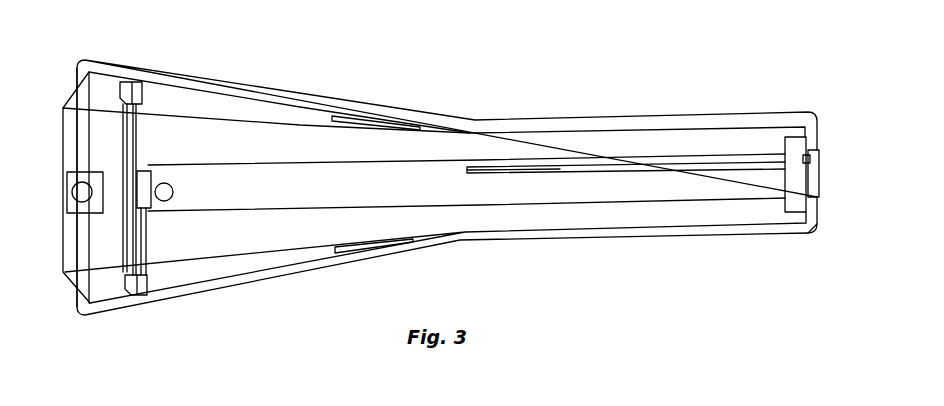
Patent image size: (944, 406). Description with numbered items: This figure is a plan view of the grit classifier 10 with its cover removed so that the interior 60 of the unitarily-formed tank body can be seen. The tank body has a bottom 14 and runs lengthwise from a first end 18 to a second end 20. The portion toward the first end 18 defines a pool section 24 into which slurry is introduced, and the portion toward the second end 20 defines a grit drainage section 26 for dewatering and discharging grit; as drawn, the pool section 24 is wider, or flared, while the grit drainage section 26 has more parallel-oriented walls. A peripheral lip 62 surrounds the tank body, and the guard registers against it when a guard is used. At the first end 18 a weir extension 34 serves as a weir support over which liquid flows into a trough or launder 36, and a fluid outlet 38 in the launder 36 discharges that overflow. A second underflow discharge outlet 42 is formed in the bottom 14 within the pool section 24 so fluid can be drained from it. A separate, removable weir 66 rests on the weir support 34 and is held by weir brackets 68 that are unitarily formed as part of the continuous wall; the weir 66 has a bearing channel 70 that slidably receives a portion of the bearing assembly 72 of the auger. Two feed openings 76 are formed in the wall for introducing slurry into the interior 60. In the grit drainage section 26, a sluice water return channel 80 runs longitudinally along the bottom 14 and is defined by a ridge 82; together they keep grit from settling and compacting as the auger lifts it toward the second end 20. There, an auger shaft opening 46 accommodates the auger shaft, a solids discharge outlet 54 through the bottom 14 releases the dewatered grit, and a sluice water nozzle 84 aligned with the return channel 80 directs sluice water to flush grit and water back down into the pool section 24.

The grit classifier 10 is at (618, 113).
The bottom 14 is at (457, 193).
The first end 18 is at (58, 253).
The second end 20 is at (818, 200).
The pool section 24 is at (252, 235).
The grit drainage section 26 is at (680, 153).
The weir extension 34 is at (118, 128).
The launder 36 is at (63, 118).
The fluid outlet 38 is at (80, 186).
The underflow discharge outlet 42 is at (165, 201).
The auger shaft opening 46 is at (820, 167).
The solids discharge outlet 54 is at (792, 147).
The interior 60 is at (427, 143).
The peripheral lip 62 is at (243, 90).
The weir 66 is at (128, 238).
The weir brackets 68 is at (142, 100).
The bearing channel 70 is at (143, 215).
The bearing assembly 72 is at (145, 168).
The feed openings 76 is at (348, 116).
The sluice water return channel 80 is at (553, 167).
The ridge 82 is at (508, 170).
The sluice water nozzle 84 is at (810, 153).